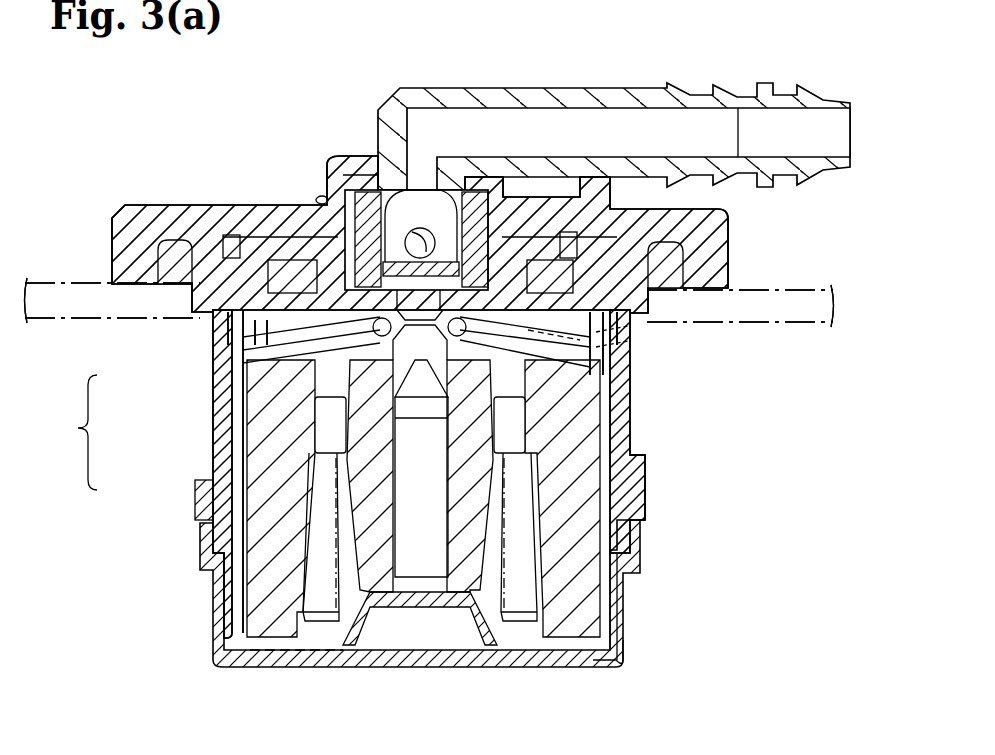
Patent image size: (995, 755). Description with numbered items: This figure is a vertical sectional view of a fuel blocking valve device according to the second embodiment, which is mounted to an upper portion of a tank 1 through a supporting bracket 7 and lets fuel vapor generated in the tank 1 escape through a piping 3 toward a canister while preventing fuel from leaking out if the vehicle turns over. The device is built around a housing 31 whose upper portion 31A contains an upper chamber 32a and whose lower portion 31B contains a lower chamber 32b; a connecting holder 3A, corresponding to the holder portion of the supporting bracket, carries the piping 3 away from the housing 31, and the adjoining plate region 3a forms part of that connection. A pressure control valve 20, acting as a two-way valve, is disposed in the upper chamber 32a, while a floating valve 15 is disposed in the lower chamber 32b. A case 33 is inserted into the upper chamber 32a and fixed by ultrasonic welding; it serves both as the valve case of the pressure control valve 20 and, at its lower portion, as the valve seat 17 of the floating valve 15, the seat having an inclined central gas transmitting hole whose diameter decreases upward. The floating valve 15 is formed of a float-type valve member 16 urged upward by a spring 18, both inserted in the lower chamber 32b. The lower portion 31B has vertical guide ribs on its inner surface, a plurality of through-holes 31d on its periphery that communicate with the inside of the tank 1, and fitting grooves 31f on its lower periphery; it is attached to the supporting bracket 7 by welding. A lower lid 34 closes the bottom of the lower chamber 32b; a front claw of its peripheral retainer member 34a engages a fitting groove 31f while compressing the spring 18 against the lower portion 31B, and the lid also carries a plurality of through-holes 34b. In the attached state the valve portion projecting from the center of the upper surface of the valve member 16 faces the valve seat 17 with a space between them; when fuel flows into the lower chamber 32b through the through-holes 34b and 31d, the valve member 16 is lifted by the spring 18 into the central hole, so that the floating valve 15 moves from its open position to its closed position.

The mounting plate of valve body 3a is at (268, 216).
The piping 3 is at (420, 234).
The connecting holder 3A is at (587, 88).
The supporting bracket 7 is at (756, 284).
The tank 1 is at (429, 302).
The pressure control valve 20 is at (318, 196).
The upper portion of the housing 31A is at (322, 178).
The upper chamber 32a is at (372, 187).
The case 33 is at (372, 300).
The housing 31 is at (634, 426).
The lower portion of the housing 31B is at (429, 474).
The through-holes 31d is at (620, 358).
The fitting grooves 31f is at (645, 490).
The lower chamber 32b is at (232, 592).
The lower lid 34 is at (532, 663).
The retainer member 34a is at (620, 598).
The through-holes 34b is at (593, 663).
The floating valve 15 is at (70, 447).
The valve member 16 is at (253, 405).
The valve seat 17 is at (215, 353).
The spring 18 is at (340, 476).